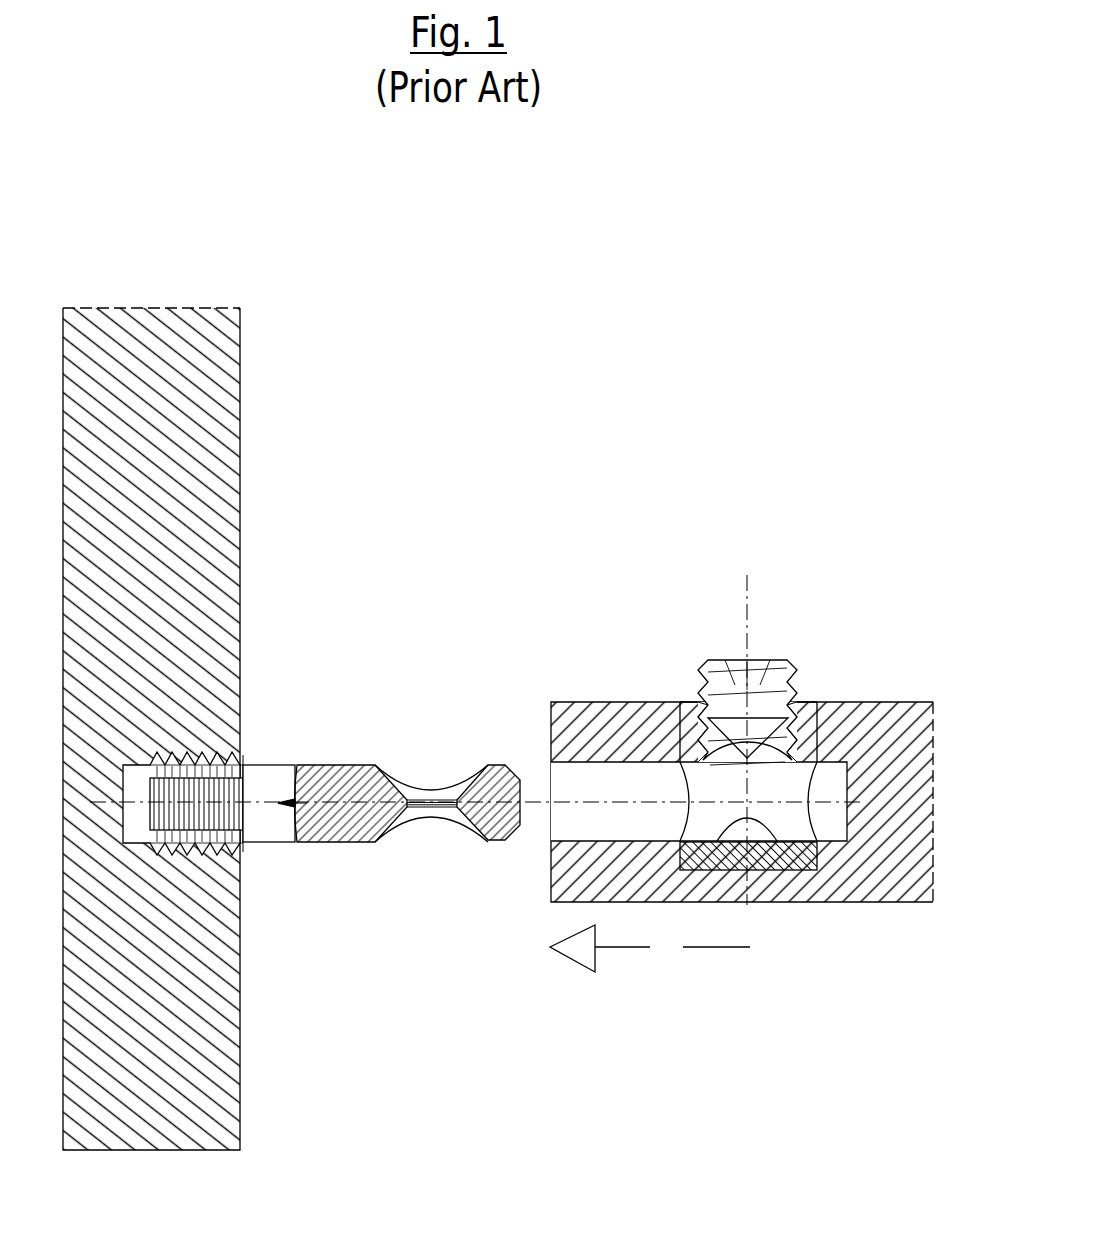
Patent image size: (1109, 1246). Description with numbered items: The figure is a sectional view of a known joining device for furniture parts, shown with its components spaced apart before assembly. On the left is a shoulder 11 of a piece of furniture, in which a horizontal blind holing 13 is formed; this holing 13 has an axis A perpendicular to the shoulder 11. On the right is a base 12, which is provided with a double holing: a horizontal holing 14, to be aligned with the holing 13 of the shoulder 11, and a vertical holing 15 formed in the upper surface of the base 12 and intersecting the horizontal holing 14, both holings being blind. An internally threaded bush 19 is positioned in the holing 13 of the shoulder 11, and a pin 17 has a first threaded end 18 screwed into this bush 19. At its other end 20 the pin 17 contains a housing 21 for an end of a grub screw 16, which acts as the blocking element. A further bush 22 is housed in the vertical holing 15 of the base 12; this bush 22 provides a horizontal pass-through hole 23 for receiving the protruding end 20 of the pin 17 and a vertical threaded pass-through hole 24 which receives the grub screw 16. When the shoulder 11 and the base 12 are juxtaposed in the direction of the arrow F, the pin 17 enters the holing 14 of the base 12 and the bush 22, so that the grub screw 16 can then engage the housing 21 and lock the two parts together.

The shoulder 11 is at (165, 399).
The base 12 is at (905, 759).
The horizontal blind holing 13 is at (150, 765).
The horizontal holing 14 is at (568, 842).
The vertical holing 15 is at (803, 703).
The grub screw 16 is at (790, 663).
The pin 17 is at (357, 746).
The first threaded end 18 is at (227, 815).
The internally threaded bush 19 is at (235, 842).
The other end 20 is at (493, 803).
The housing 21 is at (432, 792).
The bush 22 is at (797, 860).
The horizontal pass-through hole 23 is at (762, 820).
The vertical threaded pass-through hole 24 is at (684, 703).
The axis A is at (258, 803).
The arrow F is at (650, 948).